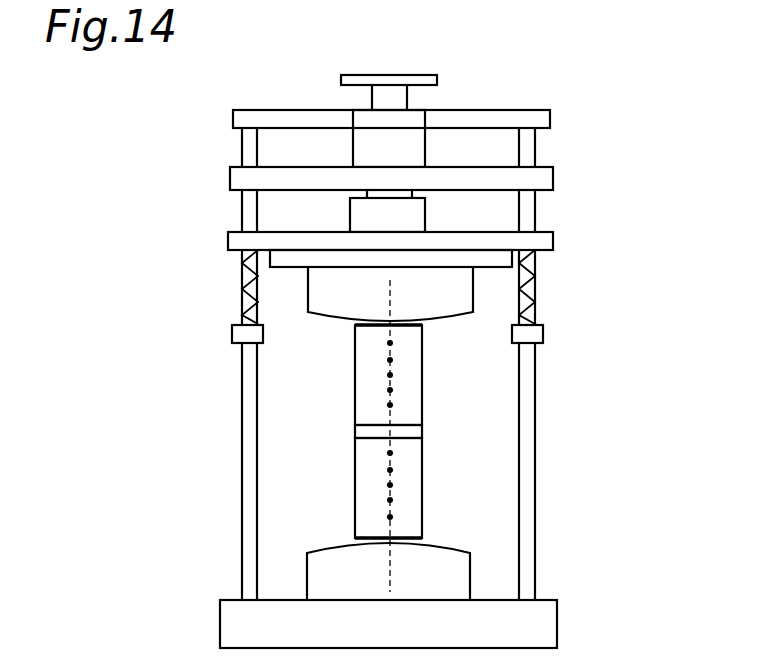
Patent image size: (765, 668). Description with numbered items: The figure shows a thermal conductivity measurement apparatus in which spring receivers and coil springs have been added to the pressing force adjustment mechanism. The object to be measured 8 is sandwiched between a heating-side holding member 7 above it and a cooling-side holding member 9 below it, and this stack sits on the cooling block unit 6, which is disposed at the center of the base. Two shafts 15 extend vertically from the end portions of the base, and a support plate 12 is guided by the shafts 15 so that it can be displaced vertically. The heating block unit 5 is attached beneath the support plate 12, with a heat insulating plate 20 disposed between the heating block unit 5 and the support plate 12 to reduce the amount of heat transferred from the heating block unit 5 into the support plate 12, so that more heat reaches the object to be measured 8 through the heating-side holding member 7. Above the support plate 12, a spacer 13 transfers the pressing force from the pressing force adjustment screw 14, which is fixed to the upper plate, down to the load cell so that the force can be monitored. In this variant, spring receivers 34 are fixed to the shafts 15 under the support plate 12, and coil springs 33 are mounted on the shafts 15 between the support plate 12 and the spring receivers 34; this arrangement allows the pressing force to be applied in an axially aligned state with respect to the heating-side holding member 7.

The heating block unit 5 is at (308, 288).
The cooling block unit 6 is at (305, 575).
The heating-side holding member 7 is at (422, 375).
The object to be measured 8 is at (422, 430).
The cooling-side holding member 9 is at (420, 477).
The support plate 12 is at (540, 240).
The spacer 13 is at (542, 175).
The pressing force adjustment screw 14 is at (413, 147).
The shafts 15 is at (242, 445).
The heat insulating plate 20 is at (535, 268).
The coil springs 33 is at (243, 285).
The spring receivers 34 is at (232, 337).